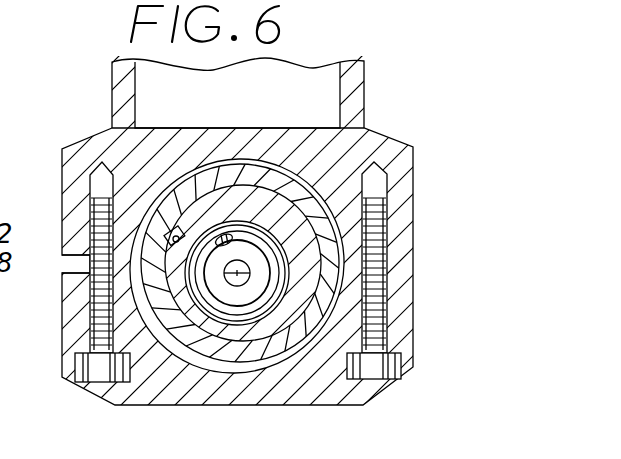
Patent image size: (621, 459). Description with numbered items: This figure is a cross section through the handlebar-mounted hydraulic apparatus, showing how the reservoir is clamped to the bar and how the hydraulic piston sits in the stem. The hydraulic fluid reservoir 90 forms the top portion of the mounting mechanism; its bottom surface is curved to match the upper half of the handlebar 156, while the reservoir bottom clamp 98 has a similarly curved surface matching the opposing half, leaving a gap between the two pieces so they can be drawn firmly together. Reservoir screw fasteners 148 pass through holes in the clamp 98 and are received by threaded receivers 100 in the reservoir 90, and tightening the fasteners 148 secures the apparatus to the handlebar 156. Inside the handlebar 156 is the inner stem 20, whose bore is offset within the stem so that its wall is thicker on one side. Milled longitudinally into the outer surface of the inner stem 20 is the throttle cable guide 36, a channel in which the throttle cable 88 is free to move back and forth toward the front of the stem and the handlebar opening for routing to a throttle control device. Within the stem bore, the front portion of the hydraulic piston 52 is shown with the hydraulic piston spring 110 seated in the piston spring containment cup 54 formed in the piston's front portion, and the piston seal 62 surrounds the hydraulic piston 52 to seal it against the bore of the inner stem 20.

The inner stem 20 is at (266, 203).
The throttle cable guide 36 is at (174, 232).
The hydraulic piston 52 is at (262, 271).
The piston spring containment cup 54 is at (300, 300).
The piston seal 62 is at (303, 252).
The throttle cable 88 is at (178, 240).
The hydraulic fluid reservoir 90 is at (366, 82).
The reservoir bottom clamp 98 is at (415, 324).
The threaded receivers 100 is at (102, 164).
The hydraulic piston spring 110 is at (212, 262).
The reservoir screw fasteners 148 is at (102, 378).
The handlebar 156 is at (233, 353).